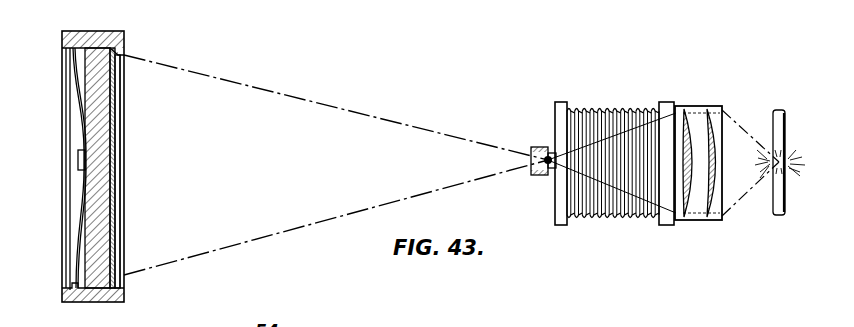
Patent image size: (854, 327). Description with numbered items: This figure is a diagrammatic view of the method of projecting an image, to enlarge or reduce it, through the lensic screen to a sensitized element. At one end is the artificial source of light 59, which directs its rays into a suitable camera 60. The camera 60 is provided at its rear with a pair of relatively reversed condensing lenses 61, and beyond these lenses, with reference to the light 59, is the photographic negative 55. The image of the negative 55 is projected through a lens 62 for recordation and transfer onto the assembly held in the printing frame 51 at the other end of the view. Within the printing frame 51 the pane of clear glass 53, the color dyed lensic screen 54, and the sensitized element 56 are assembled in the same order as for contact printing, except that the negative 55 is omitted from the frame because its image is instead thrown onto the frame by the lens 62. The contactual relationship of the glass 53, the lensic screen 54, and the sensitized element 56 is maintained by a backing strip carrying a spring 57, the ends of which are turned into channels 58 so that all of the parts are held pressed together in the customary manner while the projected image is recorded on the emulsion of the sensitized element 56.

The printing frame 51 is at (124, 37).
The pane of clear glass 53 is at (90, 130).
The lensic screen 54 is at (113, 165).
The sensitized element 56 is at (112, 196).
The spring 57 is at (76, 226).
The channels 58 is at (74, 32).
The source of light 59 is at (785, 160).
The camera 60 is at (603, 108).
The condensing lenses 61 is at (713, 118).
The lens 62 is at (544, 148).
The photographic negative 55 is at (668, 125).